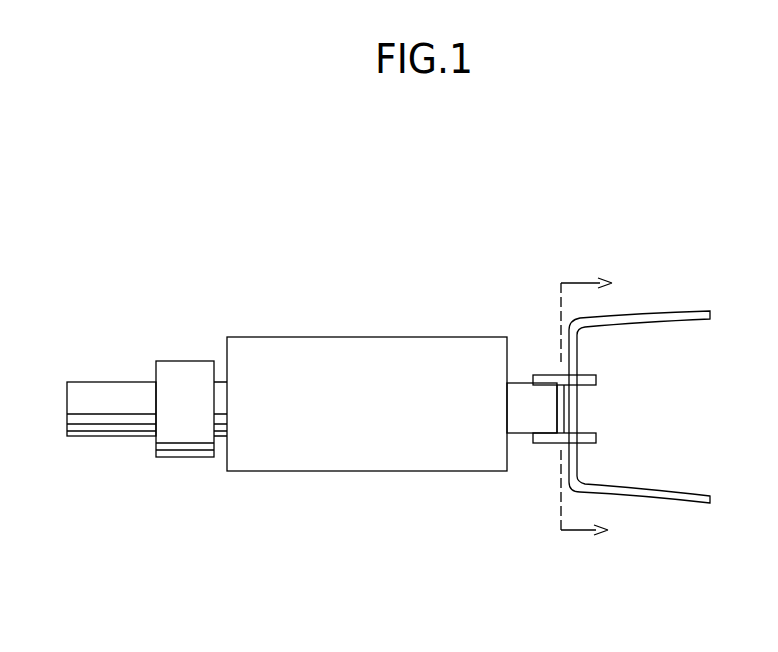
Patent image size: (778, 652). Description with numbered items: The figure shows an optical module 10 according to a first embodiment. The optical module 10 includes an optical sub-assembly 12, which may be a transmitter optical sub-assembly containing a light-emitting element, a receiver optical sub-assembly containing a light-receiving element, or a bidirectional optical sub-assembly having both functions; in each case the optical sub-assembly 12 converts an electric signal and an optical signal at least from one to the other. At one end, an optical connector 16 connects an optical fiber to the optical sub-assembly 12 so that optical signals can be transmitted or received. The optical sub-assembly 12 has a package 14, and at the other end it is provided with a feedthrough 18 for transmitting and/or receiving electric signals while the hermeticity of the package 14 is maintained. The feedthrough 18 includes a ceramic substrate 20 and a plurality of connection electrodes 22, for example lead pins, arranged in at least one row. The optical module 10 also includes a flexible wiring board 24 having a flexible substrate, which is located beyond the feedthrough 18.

The optical module 10 is at (400, 232).
The optical sub-assembly 12 is at (327, 337).
The package 14 is at (433, 373).
The optical connector 16 is at (184, 371).
The feedthrough 18 is at (519, 443).
The ceramic substrate 20 is at (517, 390).
The connection electrodes 22 is at (546, 376).
The flexible wiring board 24 is at (687, 311).